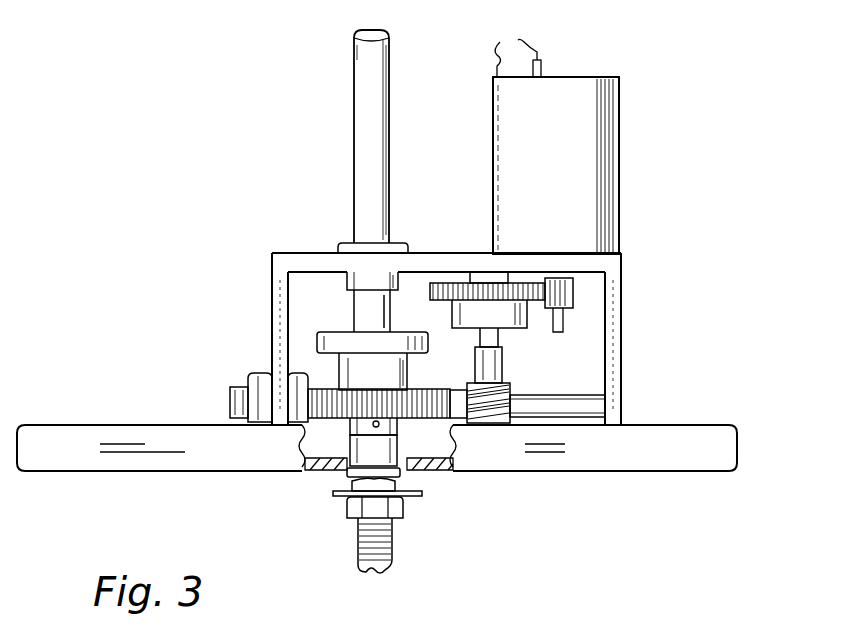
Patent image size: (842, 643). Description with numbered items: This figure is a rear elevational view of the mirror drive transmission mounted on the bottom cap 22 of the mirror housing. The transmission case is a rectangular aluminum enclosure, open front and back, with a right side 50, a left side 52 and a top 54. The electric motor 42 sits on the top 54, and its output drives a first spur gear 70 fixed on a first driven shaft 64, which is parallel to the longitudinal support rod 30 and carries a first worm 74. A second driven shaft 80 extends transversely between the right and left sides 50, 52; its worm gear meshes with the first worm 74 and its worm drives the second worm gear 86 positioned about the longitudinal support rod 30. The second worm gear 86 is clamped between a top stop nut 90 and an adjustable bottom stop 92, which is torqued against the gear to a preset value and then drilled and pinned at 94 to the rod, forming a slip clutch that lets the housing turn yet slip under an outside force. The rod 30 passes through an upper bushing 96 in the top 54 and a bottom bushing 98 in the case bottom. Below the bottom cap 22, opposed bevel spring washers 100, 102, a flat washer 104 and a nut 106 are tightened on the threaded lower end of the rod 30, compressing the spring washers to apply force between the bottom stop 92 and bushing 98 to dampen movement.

The bottom cap 22 is at (131, 475).
The longitudinal support rod 30 is at (390, 117).
The electric motor 42 is at (546, 152).
The right side 50 is at (272, 333).
The left side 52 is at (622, 324).
The top 54 is at (302, 252).
The first driven shaft 64 is at (498, 338).
The first spur gear 70 is at (447, 283).
The first worm 74 is at (507, 384).
The second driven shaft 80 is at (590, 396).
The second worm gear 86 is at (300, 414).
The top stop nut 90 is at (333, 330).
The adjustable bottom stop 92 is at (465, 424).
The pin 94 is at (363, 428).
The bushing 96 is at (397, 243).
The bottom bushing 98 is at (340, 467).
The bevel spring washer 100 is at (400, 471).
The bevel spring washer 102 is at (400, 487).
The flat washer 104 is at (337, 497).
The nut 106 is at (403, 508).